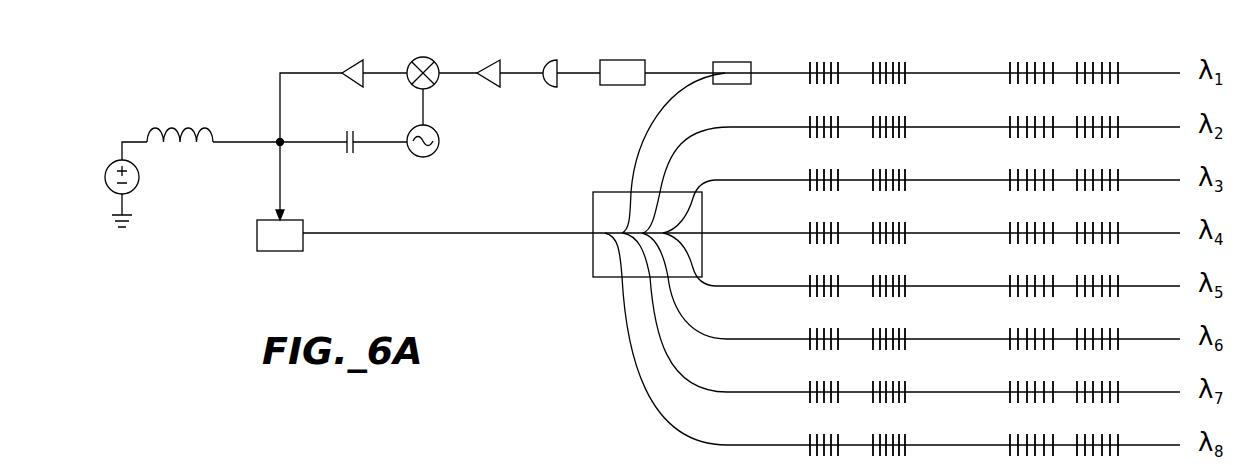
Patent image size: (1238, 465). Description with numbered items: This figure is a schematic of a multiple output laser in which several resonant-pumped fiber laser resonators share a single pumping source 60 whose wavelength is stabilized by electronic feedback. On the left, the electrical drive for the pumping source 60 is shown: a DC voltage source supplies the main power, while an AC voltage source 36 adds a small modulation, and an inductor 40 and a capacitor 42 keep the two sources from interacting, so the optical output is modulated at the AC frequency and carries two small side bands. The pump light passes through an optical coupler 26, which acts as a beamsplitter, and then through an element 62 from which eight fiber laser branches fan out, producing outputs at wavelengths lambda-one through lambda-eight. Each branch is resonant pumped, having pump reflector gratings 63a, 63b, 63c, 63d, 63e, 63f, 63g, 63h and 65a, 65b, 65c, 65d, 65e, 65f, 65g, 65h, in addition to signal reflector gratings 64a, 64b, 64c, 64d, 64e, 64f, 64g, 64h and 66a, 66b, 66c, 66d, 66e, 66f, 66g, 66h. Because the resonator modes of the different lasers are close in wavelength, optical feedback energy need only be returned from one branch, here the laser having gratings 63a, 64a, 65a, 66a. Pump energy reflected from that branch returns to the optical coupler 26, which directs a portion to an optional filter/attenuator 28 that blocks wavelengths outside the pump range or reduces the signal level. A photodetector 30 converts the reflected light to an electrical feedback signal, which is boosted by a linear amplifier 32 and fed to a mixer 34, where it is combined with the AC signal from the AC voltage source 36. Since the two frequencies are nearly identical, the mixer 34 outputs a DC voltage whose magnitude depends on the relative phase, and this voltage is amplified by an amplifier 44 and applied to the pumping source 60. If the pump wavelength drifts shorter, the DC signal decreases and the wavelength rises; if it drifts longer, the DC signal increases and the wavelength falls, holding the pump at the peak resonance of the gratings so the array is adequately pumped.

The optical coupler 26 is at (735, 61).
The filter/attenuator 28 is at (632, 86).
The photodetector 30 is at (552, 88).
The linear amplifier 32 is at (491, 87).
The mixer 34 is at (406, 87).
The AC voltage source 36 is at (138, 177).
The inductor 40 is at (187, 124).
The capacitor 42 is at (339, 153).
The amplifier 44 is at (354, 88).
The pumping source 60 is at (283, 252).
The optical coupler 62 is at (617, 277).
The pump reflector grating 63a is at (818, 62).
The pump reflector grating 63b is at (818, 116).
The pump reflector grating 63c is at (818, 169).
The pump reflector grating 63d is at (818, 222).
The pump reflector grating 63e is at (818, 275).
The pump reflector grating 63f is at (818, 328).
The pump reflector grating 63g is at (818, 381).
The pump reflector grating 63h is at (818, 434).
The signal reflector grating 64a is at (901, 62).
The signal reflector grating 64b is at (901, 116).
The signal reflector grating 64c is at (901, 169).
The signal reflector grating 64d is at (901, 222).
The signal reflector grating 64e is at (901, 275).
The signal reflector grating 64f is at (901, 328).
The signal reflector grating 64g is at (901, 381).
The signal reflector grating 64h is at (901, 434).
The pump reflector grating 65a is at (1097, 62).
The pump reflector grating 65b is at (1097, 116).
The pump reflector grating 65c is at (1097, 169).
The pump reflector grating 65d is at (1097, 222).
The pump reflector grating 65e is at (1097, 275).
The pump reflector grating 65f is at (1097, 328).
The pump reflector grating 65g is at (1097, 381).
The pump reflector grating 65h is at (1097, 434).
The signal reflector grating 66a is at (1032, 62).
The signal reflector grating 66b is at (1032, 116).
The signal reflector grating 66c is at (1032, 169).
The signal reflector grating 66d is at (1032, 222).
The signal reflector grating 66e is at (1032, 275).
The signal reflector grating 66f is at (1032, 328).
The signal reflector grating 66g is at (1032, 381).
The signal reflector grating 66h is at (1032, 434).